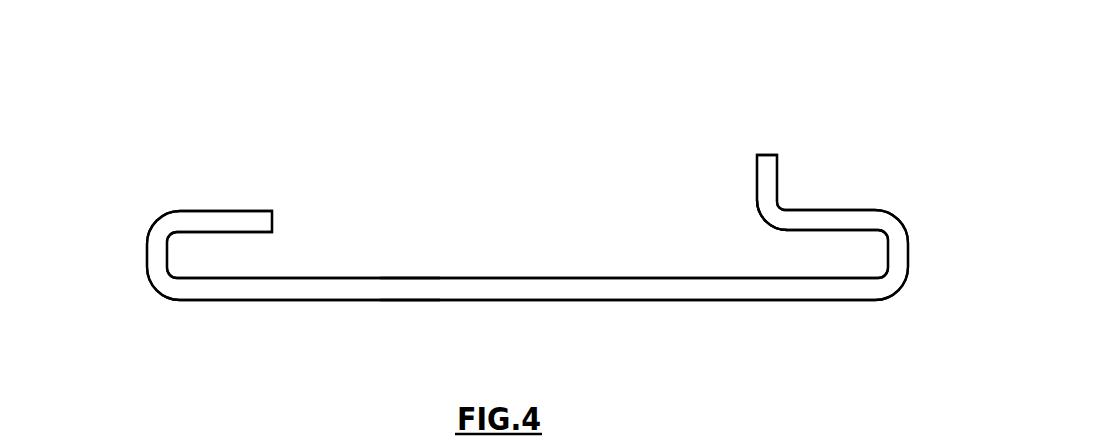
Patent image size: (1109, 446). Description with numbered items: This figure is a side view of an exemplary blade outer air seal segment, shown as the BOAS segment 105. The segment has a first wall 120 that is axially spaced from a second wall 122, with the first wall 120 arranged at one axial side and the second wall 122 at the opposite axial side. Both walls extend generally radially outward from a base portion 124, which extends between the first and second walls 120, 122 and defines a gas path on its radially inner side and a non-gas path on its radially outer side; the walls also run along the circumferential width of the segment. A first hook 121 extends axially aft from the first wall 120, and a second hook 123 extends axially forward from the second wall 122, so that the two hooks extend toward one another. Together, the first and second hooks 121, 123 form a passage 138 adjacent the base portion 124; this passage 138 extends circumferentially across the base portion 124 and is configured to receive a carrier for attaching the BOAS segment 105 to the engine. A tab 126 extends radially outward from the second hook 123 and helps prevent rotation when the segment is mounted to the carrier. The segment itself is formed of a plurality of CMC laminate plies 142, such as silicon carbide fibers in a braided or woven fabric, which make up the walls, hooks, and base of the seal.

The BOAS segment 105 is at (842, 113).
The first wall 120 is at (147, 257).
The first hook 121 is at (204, 210).
The second wall 122 is at (908, 257).
The second hook 123 is at (835, 215).
The base portion 124 is at (545, 287).
The tabs 126 is at (778, 163).
The passage 138 is at (755, 248).
The CMC laminate plies 142 is at (407, 283).